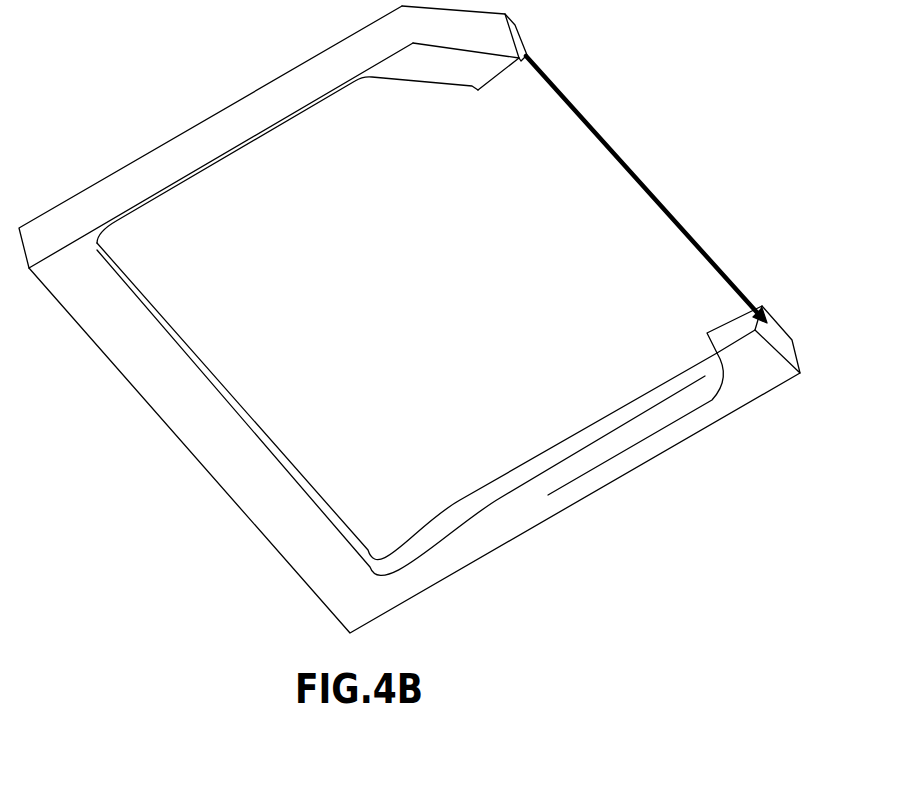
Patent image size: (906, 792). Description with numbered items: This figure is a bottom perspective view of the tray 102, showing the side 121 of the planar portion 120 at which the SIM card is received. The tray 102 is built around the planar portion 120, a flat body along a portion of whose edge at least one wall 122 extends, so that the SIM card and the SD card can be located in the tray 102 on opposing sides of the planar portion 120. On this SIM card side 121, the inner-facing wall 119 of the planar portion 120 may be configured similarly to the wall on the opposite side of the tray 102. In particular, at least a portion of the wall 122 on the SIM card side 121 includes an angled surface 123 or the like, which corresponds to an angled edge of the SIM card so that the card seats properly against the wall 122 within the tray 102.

The tray 102 is at (662, 87).
The inner-facing wall 119 is at (162, 198).
The planar portion 120 is at (667, 205).
The side 121 is at (690, 288).
The wall 122 is at (138, 395).
The angled surface 123 is at (418, 80).